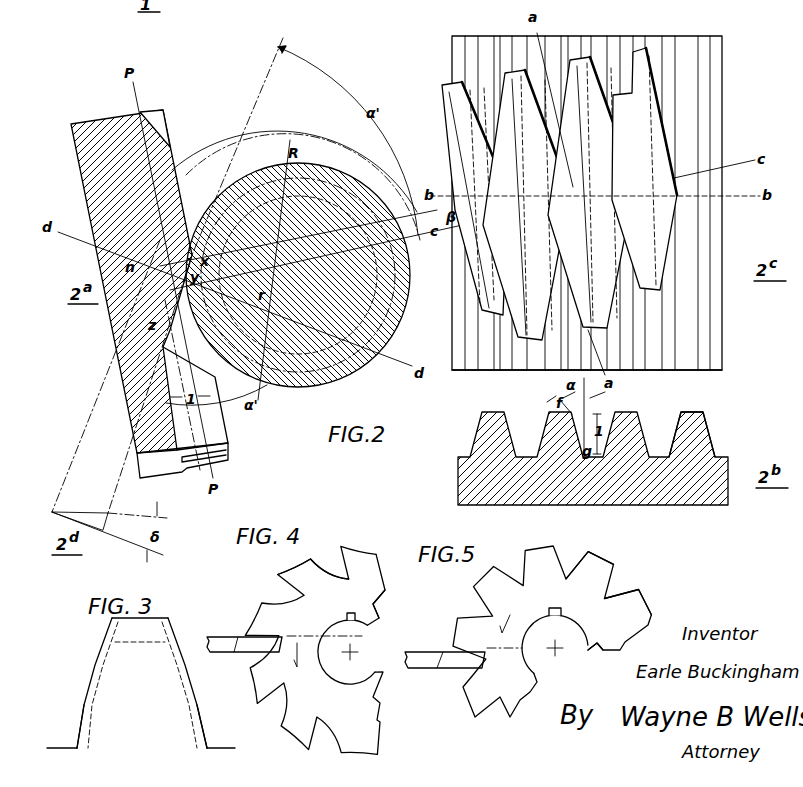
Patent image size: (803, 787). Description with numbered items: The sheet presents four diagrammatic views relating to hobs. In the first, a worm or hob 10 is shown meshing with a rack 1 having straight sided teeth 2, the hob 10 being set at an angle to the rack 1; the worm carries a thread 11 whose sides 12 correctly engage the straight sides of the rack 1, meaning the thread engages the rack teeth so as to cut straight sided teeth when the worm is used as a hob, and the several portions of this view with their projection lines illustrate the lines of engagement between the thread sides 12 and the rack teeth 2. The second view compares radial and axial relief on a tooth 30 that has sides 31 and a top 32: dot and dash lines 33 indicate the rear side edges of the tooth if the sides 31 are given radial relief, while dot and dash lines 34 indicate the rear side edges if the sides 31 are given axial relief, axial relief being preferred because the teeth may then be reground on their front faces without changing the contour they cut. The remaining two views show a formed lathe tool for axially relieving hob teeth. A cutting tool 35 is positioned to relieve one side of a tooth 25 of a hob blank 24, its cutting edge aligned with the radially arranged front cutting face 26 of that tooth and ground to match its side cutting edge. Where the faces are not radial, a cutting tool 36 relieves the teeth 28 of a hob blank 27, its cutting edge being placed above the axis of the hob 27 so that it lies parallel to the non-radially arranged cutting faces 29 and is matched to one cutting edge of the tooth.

In FIG. 2, the rack 1 is at (728, 462).
In FIG. 2, the straight sided teeth 2 is at (700, 410).
In FIG. 2, the worm or hob 10 is at (655, 157).
In FIG. 2, the thread 11 is at (587, 378).
In FIG. 2, the sides of the thread 12 is at (672, 290).
In FIG. 5, the hob 24 is at (598, 656).
In FIG. 5, the teeth 25 is at (652, 600).
In FIG. 5, the radially arranged cutting faces 26 is at (630, 600).
In FIG. 4, the hob 27 is at (378, 614).
In FIG. 5, the hob 27 is at (525, 631).
In FIG. 4, the teeth 28 is at (362, 547).
In FIG. 4, the non-radially arranged cutting faces 29 is at (340, 556).
In FIG. 3, the tooth 30 is at (185, 735).
In FIG. 3, the sides 31 is at (98, 650).
In FIG. 3, the top 32 is at (170, 612).
In FIG. 3, the dot and dash lines 33 is at (93, 680).
In FIG. 3, the dot and dash lines 34 is at (80, 718).
In FIG. 5, the cutting tool 35 is at (432, 670).
In FIG. 4, the cutting tool 36 is at (226, 636).